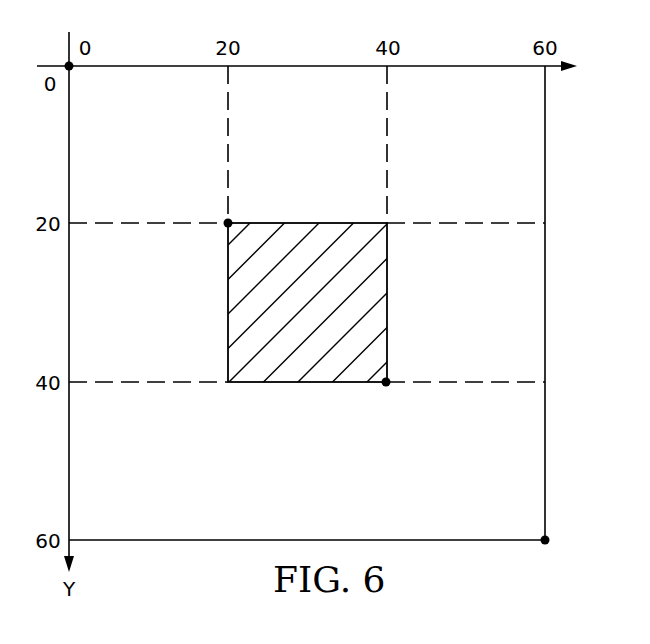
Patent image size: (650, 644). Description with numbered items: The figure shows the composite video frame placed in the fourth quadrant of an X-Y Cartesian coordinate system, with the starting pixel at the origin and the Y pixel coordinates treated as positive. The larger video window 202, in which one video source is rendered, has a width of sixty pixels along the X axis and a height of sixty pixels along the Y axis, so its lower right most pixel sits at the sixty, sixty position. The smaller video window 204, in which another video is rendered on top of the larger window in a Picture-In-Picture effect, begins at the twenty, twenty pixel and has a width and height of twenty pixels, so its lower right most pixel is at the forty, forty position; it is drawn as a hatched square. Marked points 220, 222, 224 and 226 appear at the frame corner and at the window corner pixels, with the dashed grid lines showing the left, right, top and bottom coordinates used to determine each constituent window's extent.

The video window 202 is at (447, 73).
The video window 204 is at (332, 232).
The corner point 220 is at (72, 537).
The first point 222 is at (228, 385).
The second point 224 is at (387, 388).
The third point 226 is at (545, 548).